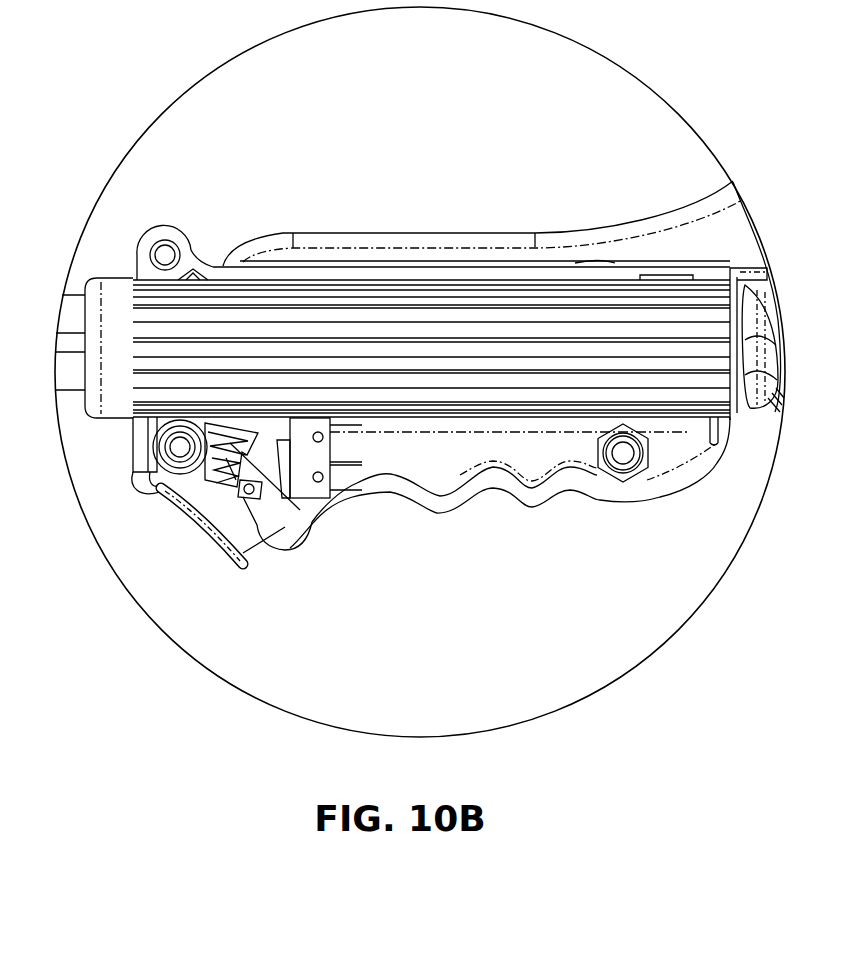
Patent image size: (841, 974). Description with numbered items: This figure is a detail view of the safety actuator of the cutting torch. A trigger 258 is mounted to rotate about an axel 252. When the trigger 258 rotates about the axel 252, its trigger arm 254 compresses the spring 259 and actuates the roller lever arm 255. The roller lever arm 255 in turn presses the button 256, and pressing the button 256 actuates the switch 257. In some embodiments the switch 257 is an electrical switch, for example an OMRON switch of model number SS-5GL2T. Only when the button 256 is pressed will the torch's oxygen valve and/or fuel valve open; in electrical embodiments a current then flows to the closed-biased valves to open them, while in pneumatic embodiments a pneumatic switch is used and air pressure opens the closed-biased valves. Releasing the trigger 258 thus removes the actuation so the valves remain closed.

The axel 252 is at (180, 447).
The trigger arm 254 is at (237, 512).
The roller lever arm 255 is at (231, 443).
The button 256 is at (278, 443).
The switch 257 is at (313, 488).
The trigger 258 is at (198, 523).
The spring 259 is at (300, 510).